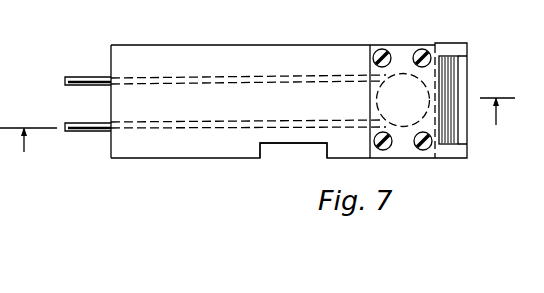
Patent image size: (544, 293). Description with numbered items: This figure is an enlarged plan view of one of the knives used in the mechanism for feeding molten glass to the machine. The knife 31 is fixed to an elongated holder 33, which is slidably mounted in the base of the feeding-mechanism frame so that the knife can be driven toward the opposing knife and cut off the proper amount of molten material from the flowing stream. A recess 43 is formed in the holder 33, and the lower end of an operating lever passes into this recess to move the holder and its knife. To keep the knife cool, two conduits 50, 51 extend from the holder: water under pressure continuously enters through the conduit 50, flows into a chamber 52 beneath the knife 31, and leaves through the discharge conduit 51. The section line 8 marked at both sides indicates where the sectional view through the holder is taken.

The section line 8- 8 is at (257, 115).
The knife 31 is at (418, 27).
The holder 33 is at (311, 27).
The recess 43 is at (288, 150).
The conduit 50 is at (97, 132).
The discharge conduit 51 is at (223, 67).
The chamber 52 is at (378, 93).